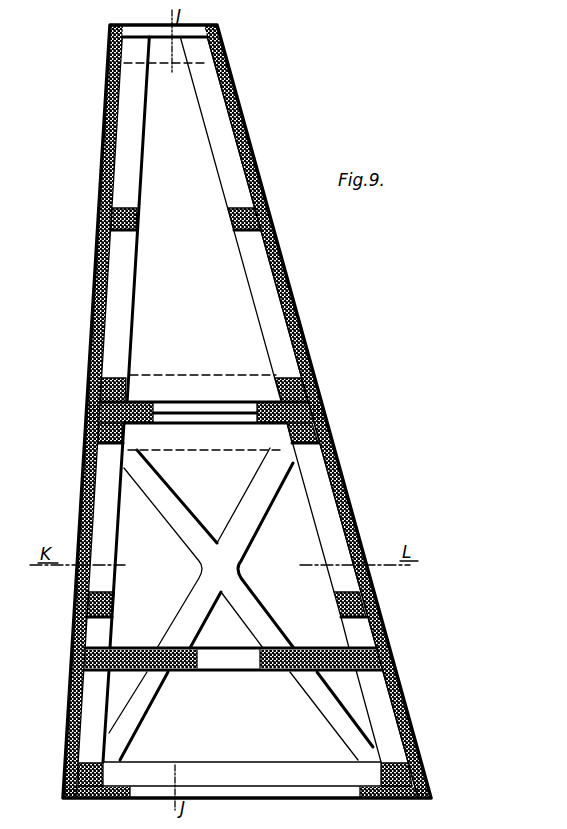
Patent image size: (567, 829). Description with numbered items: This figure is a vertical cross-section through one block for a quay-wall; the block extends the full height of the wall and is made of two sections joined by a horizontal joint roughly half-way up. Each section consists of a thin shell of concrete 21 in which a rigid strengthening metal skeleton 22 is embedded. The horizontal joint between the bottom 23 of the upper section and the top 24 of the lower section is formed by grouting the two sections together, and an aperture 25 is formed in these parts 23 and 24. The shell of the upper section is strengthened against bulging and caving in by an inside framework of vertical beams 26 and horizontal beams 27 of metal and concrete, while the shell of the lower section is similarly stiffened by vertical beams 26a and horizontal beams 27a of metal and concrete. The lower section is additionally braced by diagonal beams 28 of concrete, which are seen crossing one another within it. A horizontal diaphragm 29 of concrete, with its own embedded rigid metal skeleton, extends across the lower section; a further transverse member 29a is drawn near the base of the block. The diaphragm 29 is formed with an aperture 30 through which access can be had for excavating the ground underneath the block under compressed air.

The shell of concrete 21 is at (104, 168).
The strengthening metal skeleton 22 is at (294, 302).
The bottom of the upper section 23 is at (98, 400).
The top of the lower section 24 is at (100, 435).
The aperture 25 is at (205, 410).
The vertical beams 26 is at (141, 161).
The vertical beams 26a is at (115, 540).
The horizontal beams 27 is at (180, 64).
The horizontal beams 27a is at (113, 605).
The diagonal beams 28 is at (254, 496).
The horizontal diaphragm 29 is at (95, 663).
The bottom transverse chord 29a is at (245, 728).
The aperture 30 is at (243, 663).